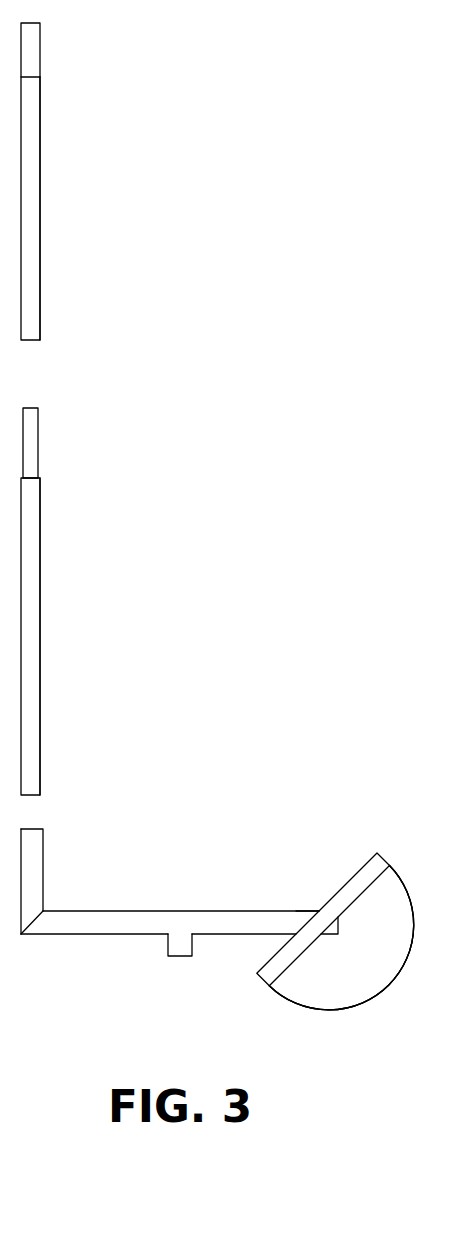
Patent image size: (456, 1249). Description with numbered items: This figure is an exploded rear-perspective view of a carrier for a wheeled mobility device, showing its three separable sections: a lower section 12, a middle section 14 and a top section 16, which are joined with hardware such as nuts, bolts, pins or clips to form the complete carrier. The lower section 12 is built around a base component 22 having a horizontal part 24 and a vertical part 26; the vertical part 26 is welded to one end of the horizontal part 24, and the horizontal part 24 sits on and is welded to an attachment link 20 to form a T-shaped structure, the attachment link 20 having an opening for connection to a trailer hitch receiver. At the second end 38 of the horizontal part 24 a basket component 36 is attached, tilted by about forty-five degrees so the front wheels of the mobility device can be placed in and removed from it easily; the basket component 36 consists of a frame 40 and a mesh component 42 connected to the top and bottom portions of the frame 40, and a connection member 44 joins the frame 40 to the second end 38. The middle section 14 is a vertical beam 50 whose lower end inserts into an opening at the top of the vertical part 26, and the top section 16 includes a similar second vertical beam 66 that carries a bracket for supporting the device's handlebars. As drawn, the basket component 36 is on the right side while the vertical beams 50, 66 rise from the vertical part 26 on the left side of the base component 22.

The lower section 12 is at (238, 936).
The middle section 14 is at (107, 588).
The top section 16 is at (108, 171).
The attachment link 20 is at (178, 957).
The base component 22 is at (44, 945).
The horizontal part 24 is at (96, 911).
The vertical part 26 is at (43, 860).
The basket component 36 is at (341, 1032).
The second end 38 is at (314, 911).
The frame 40 is at (369, 878).
The mesh component 42 is at (405, 967).
The connection member 44 is at (341, 938).
The vertical beam 50 is at (40, 675).
The second vertical beam 66 is at (40, 238).